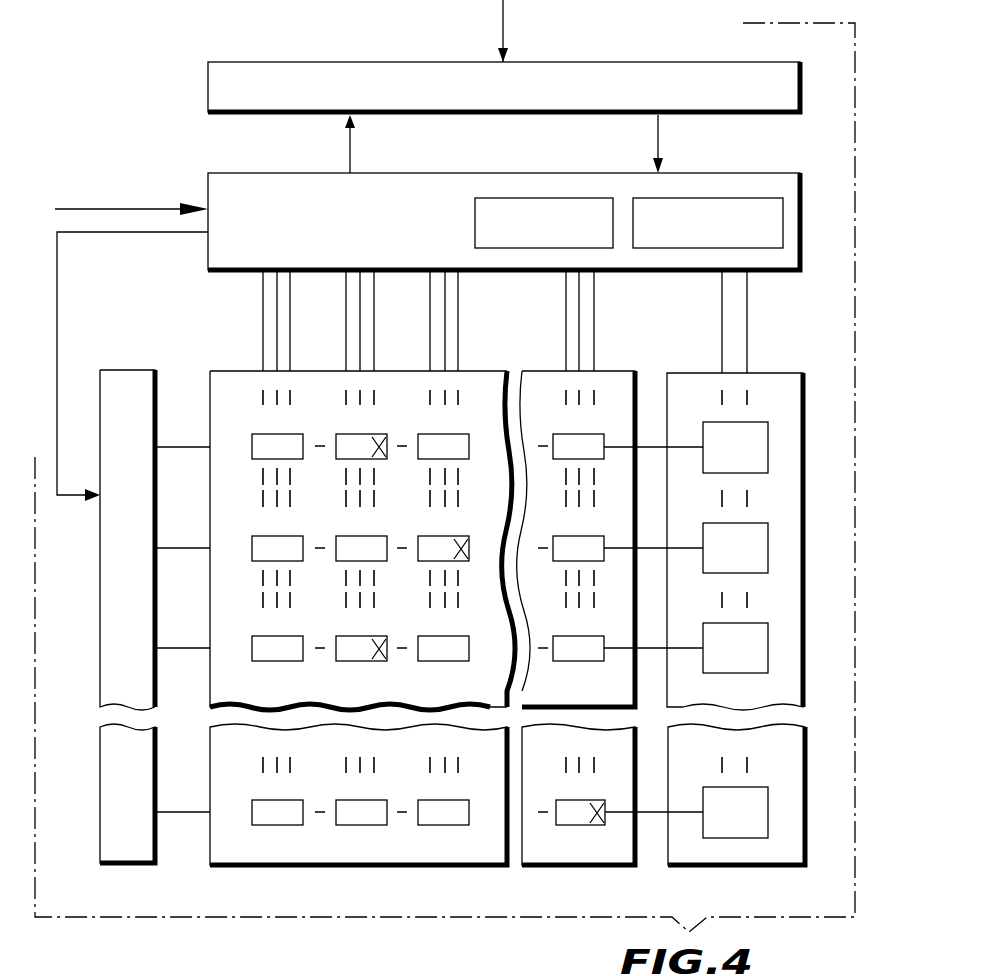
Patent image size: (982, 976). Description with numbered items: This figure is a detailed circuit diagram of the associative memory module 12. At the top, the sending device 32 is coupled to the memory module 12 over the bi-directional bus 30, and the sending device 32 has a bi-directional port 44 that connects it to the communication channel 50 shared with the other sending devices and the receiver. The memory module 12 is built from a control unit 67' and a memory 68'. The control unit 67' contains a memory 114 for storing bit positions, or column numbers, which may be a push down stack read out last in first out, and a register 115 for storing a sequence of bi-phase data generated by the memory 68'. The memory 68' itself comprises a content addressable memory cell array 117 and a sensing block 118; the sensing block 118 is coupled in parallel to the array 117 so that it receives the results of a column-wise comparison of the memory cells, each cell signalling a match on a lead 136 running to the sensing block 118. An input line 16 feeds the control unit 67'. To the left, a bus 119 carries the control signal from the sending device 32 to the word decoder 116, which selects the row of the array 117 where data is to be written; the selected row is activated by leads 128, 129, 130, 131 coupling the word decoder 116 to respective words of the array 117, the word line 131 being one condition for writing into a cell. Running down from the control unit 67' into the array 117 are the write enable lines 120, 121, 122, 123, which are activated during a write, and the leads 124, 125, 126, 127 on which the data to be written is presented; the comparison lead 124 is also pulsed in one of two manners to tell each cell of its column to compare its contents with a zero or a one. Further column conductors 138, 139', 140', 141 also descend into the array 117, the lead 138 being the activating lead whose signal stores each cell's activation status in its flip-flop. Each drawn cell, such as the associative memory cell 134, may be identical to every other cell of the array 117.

The associative memory module 12 is at (766, 161).
The input signal line 16 is at (145, 208).
The bi-directional bus 30 is at (352, 145).
The sending device 32 is at (360, 62).
The bi-directional port 44 is at (507, 60).
The communication channel 50 is at (503, 17).
The memory 114 is at (560, 198).
The register 115 is at (675, 198).
The word decoder 116 is at (150, 370).
The content addressable memory cell array 117 is at (422, 603).
The sensing block 118 is at (803, 425).
The bus 119 is at (58, 292).
The write enable line 120 is at (277, 345).
The write enable line 121 is at (360, 345).
The write enable line 122 is at (445, 313).
The write enable line 123 is at (579, 313).
The comparison lead 124 is at (263, 291).
The lead 125 is at (346, 291).
The lead 126 is at (430, 291).
The lead 127 is at (566, 291).
The lead 128 is at (190, 812).
The lead 129 is at (190, 648).
The lead 130 is at (190, 548).
The word line 131 is at (190, 447).
The associative memory cell 134 is at (270, 434).
The lead 136 is at (322, 448).
The lead 138 is at (290, 313).
The column line 139' is at (401, 320).
The column line 140' is at (490, 320).
The column line 141 is at (594, 345).
The control unit 67' is at (809, 291).
The memory 68' is at (835, 555).